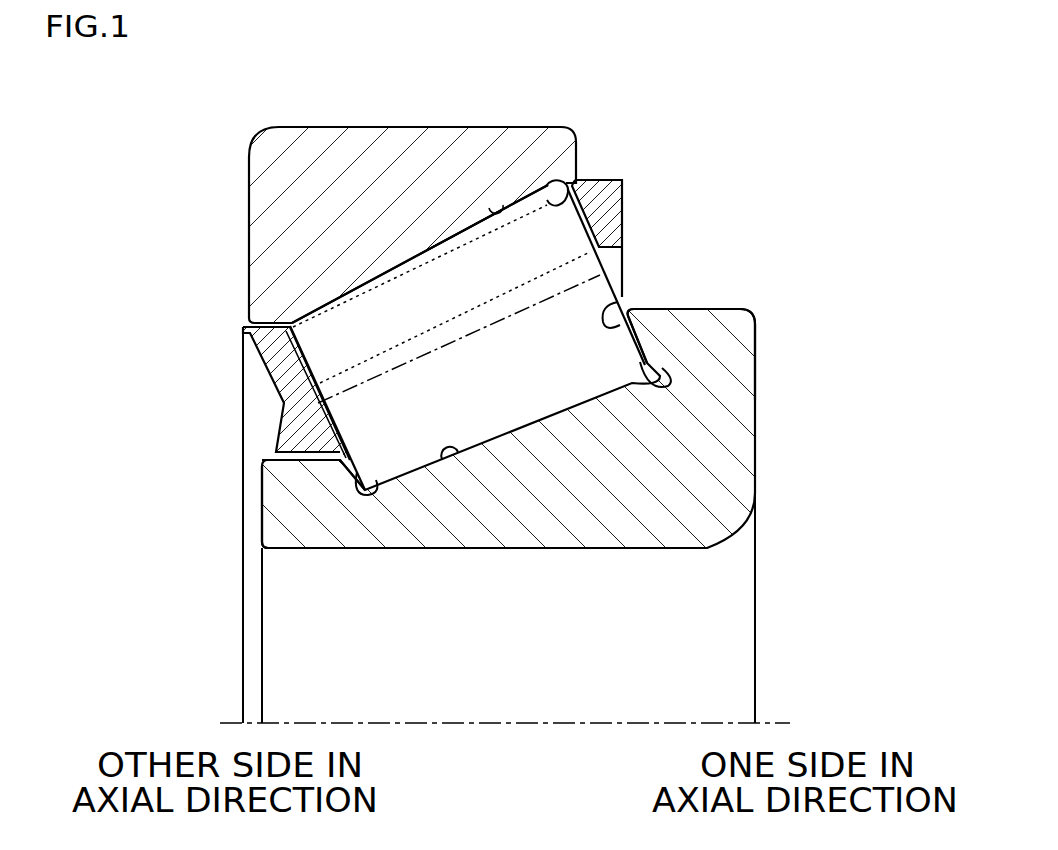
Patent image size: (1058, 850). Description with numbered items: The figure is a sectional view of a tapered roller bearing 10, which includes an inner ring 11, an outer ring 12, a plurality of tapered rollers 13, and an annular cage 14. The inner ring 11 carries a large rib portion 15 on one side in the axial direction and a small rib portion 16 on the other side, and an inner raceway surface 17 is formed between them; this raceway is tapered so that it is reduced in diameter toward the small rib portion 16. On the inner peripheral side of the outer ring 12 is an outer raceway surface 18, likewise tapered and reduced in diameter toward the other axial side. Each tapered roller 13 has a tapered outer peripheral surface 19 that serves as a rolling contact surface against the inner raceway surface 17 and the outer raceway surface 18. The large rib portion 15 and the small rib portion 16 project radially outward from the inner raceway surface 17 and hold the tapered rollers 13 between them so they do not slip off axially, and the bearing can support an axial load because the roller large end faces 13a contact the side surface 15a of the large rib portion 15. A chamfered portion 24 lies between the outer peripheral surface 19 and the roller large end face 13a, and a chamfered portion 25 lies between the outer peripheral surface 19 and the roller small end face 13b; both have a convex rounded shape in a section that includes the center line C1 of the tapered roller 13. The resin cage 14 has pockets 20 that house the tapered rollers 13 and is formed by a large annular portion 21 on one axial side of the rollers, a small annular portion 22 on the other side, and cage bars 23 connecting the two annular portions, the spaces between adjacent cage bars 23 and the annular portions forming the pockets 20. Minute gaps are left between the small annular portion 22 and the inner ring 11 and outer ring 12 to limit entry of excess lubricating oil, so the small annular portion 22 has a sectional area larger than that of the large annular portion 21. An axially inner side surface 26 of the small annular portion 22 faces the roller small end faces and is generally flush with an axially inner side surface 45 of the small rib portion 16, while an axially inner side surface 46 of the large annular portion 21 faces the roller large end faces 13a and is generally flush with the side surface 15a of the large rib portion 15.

The tapered roller bearing 10 is at (740, 228).
The inner ring 11 is at (757, 383).
The outer ring 12 is at (248, 198).
The tapered roller 13 is at (428, 337).
The roller large end face 13a is at (617, 270).
The roller small end face 13b is at (325, 418).
The cage 14 is at (400, 274).
The large rib portion 15 is at (713, 333).
The side surface of the large rib portion 15a is at (622, 296).
The small rib portion 16 is at (302, 478).
The inner raceway surface 17 is at (457, 455).
The outer raceway surface 18 is at (505, 203).
The outer peripheral surface 19 is at (397, 258).
The pocket 20 is at (468, 257).
The large annular portion 21 is at (614, 203).
The small annular portion 22 is at (265, 345).
The cage bar 23 is at (333, 295).
The chamfered portion 24 is at (667, 385).
The chamfered portion 25 is at (363, 495).
The axially inner side surface of the small annular portion 26 is at (300, 342).
The axially inner side surface of the small rib portion 45 is at (393, 485).
The axially inner side surface of the large annular portion 46 is at (553, 180).
The center line C1 is at (412, 363).